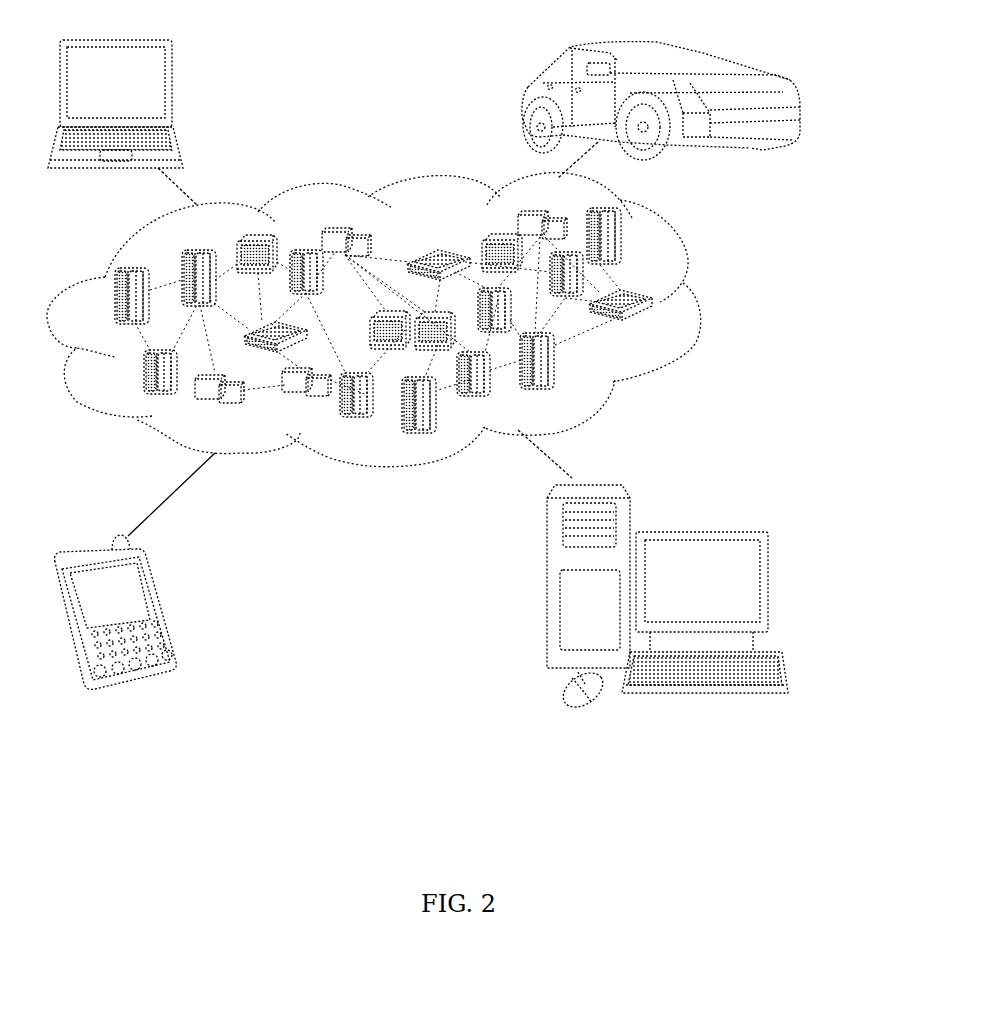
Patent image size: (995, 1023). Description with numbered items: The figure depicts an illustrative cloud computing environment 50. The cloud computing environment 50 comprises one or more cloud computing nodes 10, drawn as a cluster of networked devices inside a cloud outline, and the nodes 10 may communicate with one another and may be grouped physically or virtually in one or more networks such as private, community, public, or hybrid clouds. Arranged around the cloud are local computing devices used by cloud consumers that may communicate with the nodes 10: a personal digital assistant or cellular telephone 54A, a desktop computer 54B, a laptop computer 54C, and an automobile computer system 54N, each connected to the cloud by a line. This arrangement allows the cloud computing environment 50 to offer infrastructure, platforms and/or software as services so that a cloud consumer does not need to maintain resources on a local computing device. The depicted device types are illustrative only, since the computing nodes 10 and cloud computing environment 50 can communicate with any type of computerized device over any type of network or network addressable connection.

The cloud computing nodes 10 is at (662, 331).
The cloud computing environment 50 is at (698, 302).
The personal digital assistant (PDA) or cellular telephone 54A is at (163, 605).
The desktop computer 54B is at (700, 530).
The laptop computer 54C is at (174, 78).
The automobile computer system 54N is at (522, 100).